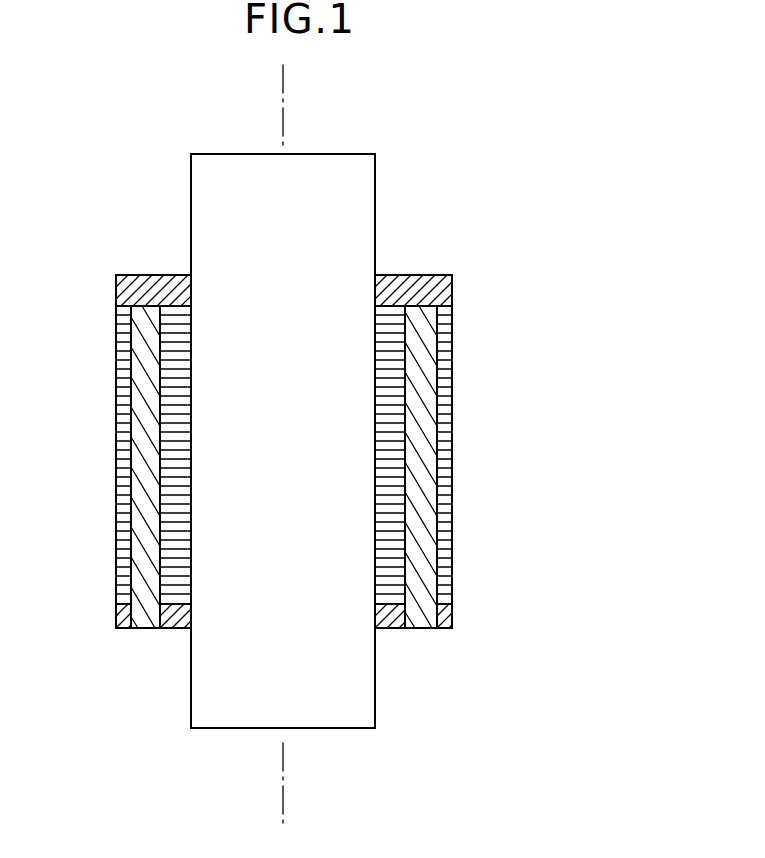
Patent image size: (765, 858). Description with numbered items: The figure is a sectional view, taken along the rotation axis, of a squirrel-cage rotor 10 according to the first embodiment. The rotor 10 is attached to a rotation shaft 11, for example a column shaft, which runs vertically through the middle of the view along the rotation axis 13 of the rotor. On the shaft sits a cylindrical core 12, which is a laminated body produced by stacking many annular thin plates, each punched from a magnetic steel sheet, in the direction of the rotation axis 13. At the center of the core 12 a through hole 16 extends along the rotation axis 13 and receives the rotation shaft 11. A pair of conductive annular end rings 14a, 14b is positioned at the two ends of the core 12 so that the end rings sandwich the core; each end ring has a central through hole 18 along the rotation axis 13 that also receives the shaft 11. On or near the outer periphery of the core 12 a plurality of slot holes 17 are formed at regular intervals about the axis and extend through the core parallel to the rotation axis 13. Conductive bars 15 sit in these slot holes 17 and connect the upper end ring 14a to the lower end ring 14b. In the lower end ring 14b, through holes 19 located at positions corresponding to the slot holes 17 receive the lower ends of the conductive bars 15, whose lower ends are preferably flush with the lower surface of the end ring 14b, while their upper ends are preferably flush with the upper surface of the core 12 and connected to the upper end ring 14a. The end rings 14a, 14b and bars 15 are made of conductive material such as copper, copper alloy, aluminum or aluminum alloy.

The squirrel-cage rotor 10 is at (489, 216).
The rotation shaft 11 is at (205, 153).
The cylindrical core 12 is at (453, 333).
The rotation axis 13 is at (284, 82).
The upper conductive end ring 14a is at (446, 276).
The lower conductive end ring 14b is at (452, 612).
The conductive bars 15 is at (432, 513).
The through hole 16 is at (378, 418).
The slot holes 17 is at (437, 570).
The through hole 18 is at (377, 282).
The through holes 19 is at (427, 618).